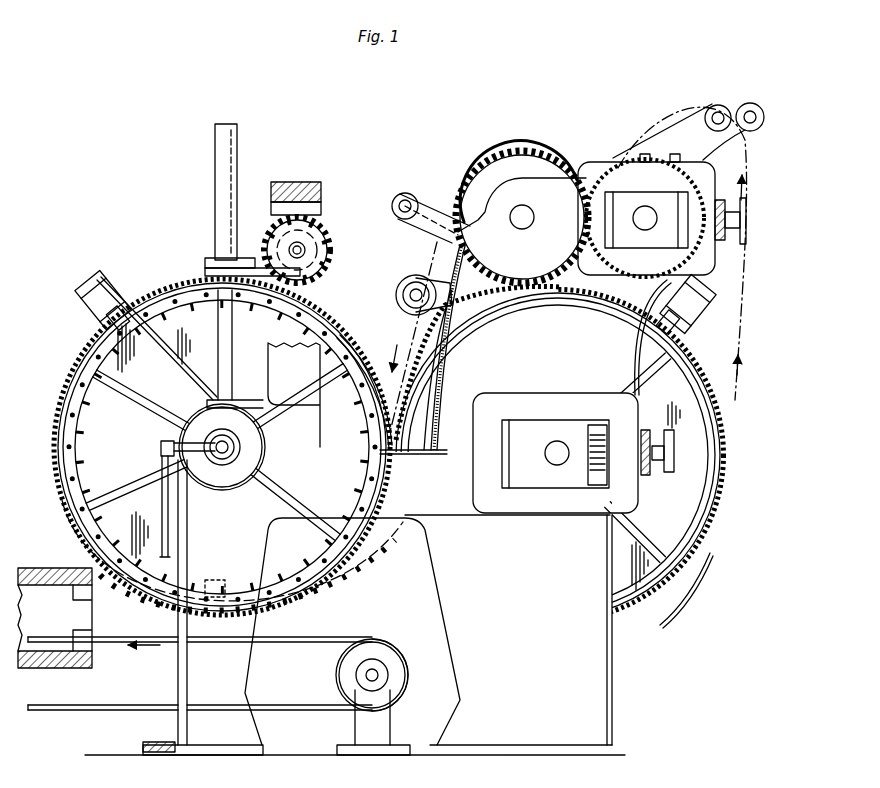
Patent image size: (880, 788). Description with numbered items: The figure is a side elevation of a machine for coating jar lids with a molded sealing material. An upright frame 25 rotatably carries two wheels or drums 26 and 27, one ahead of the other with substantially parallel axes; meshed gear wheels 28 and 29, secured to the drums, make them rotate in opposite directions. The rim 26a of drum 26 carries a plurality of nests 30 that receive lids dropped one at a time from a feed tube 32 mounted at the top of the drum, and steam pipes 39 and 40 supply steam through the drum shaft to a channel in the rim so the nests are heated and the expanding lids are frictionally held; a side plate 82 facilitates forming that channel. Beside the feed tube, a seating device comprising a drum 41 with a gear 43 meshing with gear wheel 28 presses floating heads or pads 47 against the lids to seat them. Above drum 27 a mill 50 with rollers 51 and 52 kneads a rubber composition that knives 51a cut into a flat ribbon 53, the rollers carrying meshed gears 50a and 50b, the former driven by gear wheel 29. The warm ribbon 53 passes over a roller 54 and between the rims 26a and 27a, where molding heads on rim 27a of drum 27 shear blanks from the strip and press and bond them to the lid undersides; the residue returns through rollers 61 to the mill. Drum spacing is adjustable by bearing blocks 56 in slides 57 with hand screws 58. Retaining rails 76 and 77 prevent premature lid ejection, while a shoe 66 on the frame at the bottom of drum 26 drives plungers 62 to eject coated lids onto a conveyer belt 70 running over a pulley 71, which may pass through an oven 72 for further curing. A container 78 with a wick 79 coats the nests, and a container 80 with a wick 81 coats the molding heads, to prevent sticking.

The upright frame 25 is at (308, 182).
The drum 26 is at (202, 447).
The rim of drum 26 26a is at (75, 497).
The drum 27 is at (579, 453).
The rim of drum 27 27a is at (705, 530).
The gear wheel 28 is at (70, 358).
The gear wheel 29 is at (600, 293).
The nests 30 is at (60, 440).
The feed tube 32 is at (215, 160).
The steam pipe 39 is at (160, 447).
The steam pipe 40 is at (355, 763).
The drum 41 is at (324, 234).
The gear 43 is at (318, 230).
The heads or pads 47 is at (338, 275).
The mill 50 is at (490, 176).
The gear 50a is at (468, 185).
The gear 50b is at (700, 258).
The roller 51 is at (500, 178).
The knives 51a is at (440, 200).
The roller 52 is at (636, 148).
The flat ribbon 53 is at (400, 320).
The roller 54 is at (408, 285).
The bearing blocks 56 is at (555, 457).
The slides 57 is at (597, 500).
The hand screws 58 is at (672, 455).
The rollers 61 is at (710, 106).
The plungers 62 is at (80, 428).
The shoe 66 is at (216, 590).
The conveyer belt 70 is at (100, 708).
The pulley 71 is at (338, 680).
The oven 72 is at (45, 580).
The retaining rail 76 is at (232, 265).
The retaining rail 77 is at (332, 335).
The container 78 is at (90, 285).
The wick 79 is at (105, 320).
The container 80 is at (710, 304).
The wick 81 is at (680, 326).
The side plate 82 is at (70, 456).